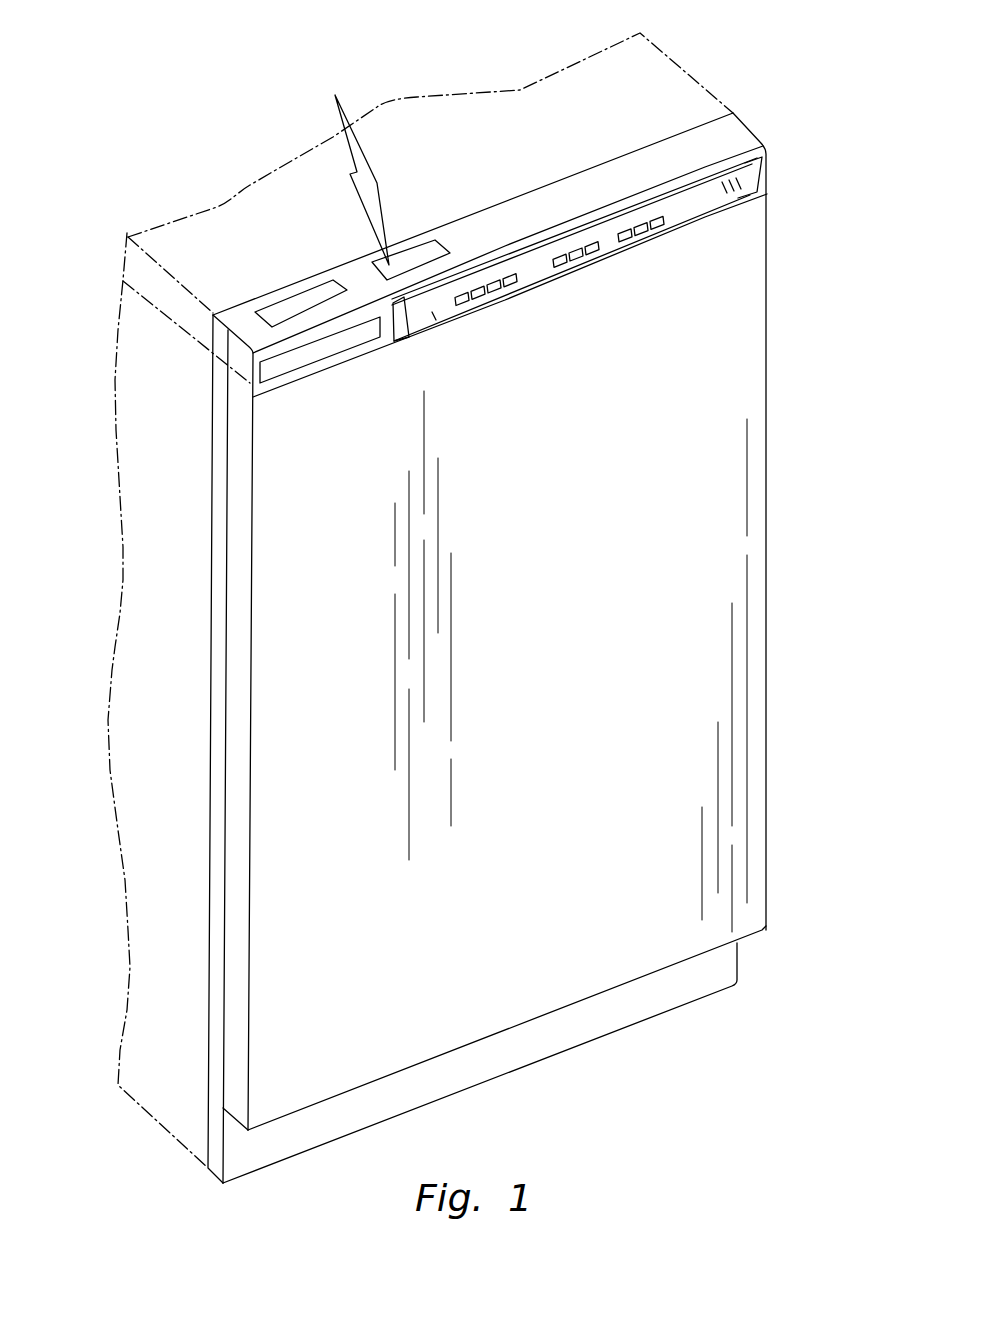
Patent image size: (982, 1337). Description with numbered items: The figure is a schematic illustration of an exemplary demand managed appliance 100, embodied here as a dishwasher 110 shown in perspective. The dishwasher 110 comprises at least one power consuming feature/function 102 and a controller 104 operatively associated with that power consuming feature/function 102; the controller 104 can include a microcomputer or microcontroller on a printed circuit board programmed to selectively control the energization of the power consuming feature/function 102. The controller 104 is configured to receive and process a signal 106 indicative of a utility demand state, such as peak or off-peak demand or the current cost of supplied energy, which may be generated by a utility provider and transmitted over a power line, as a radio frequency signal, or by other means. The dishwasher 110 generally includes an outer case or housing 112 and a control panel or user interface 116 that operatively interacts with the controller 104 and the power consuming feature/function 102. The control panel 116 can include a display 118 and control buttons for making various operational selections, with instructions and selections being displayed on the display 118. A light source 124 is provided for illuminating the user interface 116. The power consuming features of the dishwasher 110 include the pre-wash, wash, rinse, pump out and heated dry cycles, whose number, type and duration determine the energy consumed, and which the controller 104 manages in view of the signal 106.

The demand managed appliance 100 is at (768, 102).
The power consuming feature/function 102 is at (299, 290).
The controller 104 is at (450, 235).
The signal 106 is at (350, 155).
The dishwasher 110 is at (781, 519).
The outer case or housing 112 is at (170, 800).
The control panel or user interface 116 is at (516, 295).
The display 118 is at (309, 382).
The light source 124 is at (440, 325).